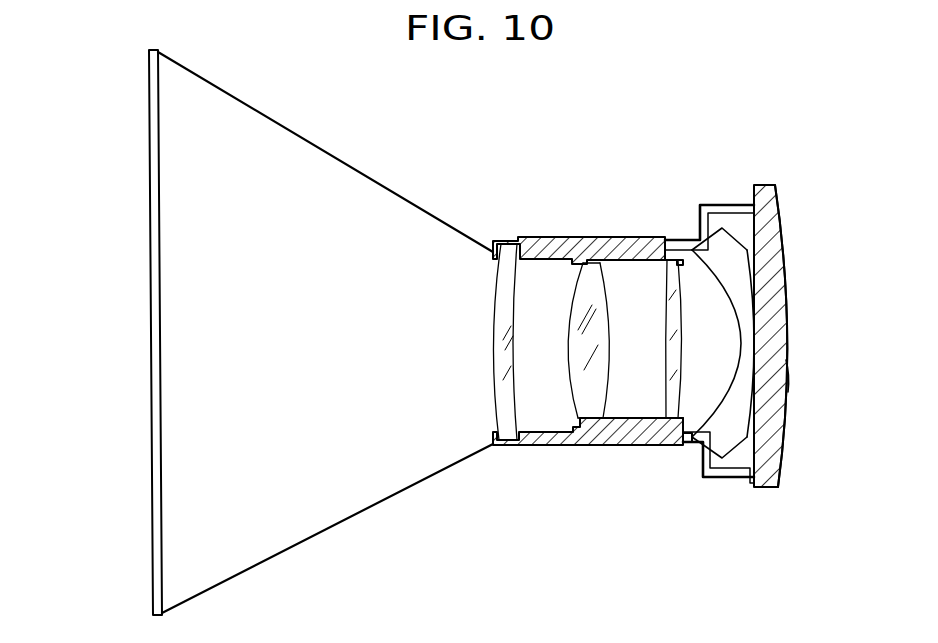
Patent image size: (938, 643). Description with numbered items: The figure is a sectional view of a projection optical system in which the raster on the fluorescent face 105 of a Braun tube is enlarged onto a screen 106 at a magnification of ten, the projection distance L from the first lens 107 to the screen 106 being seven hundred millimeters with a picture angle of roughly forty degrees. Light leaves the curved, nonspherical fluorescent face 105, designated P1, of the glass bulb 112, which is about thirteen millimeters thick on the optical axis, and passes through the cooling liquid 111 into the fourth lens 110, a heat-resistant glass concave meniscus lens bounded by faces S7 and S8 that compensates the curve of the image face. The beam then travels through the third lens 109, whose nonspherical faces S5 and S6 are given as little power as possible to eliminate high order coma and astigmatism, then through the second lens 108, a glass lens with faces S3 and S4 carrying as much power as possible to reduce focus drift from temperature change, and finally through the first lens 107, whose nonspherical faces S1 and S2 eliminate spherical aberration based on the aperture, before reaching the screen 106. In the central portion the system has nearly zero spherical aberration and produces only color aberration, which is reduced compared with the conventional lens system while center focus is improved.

The fluorescent face of Braun tube 105 is at (773, 188).
The screen 106 is at (150, 184).
The first lens 107 is at (503, 295).
The second lens 108 is at (593, 272).
The third lens 109 is at (673, 276).
The fourth lens 110 is at (728, 249).
The cooling liquid 111 is at (735, 457).
The glass bulb 112 is at (760, 489).
The face S1 of the first lens S1 is at (499, 283).
The face S2 of the first lens S2 is at (507, 352).
The face S3 of the second lens S3 is at (573, 288).
The face S4 of the second lens S4 is at (610, 363).
The face S5 of the third lens S5 is at (667, 303).
The face S6 of the third lens S6 is at (680, 308).
The face S7 of the fourth lens S7 is at (733, 383).
The face S8 of the fourth lens S8 is at (748, 248).
The fluorescent face P1 is at (791, 376).
The distance from screen to lens L is at (490, 348).